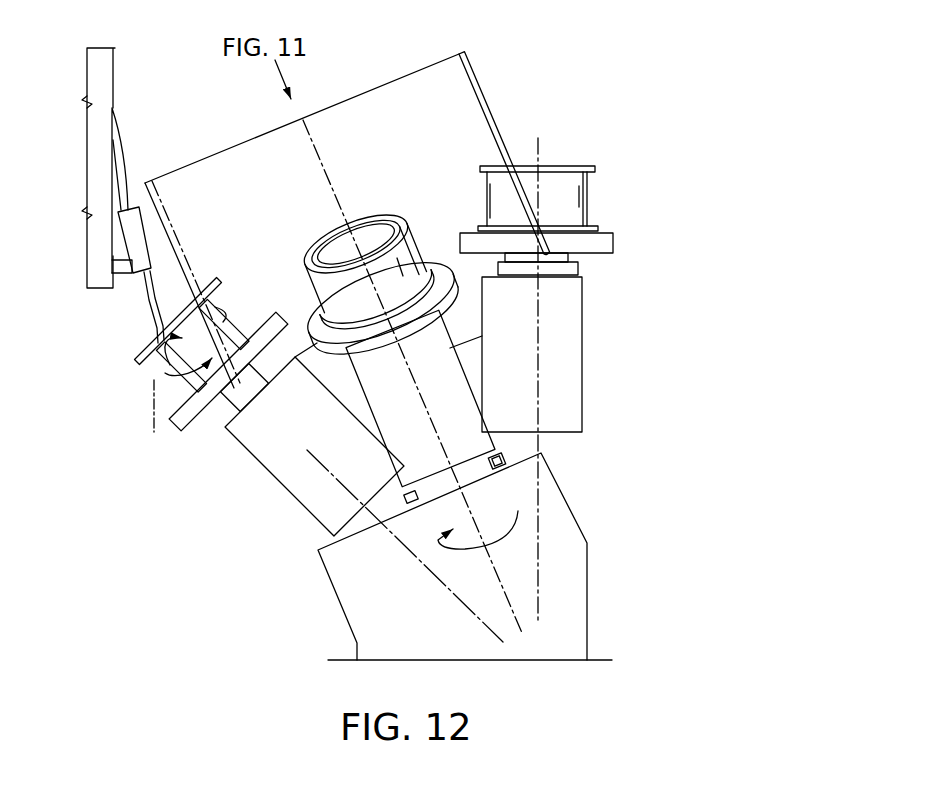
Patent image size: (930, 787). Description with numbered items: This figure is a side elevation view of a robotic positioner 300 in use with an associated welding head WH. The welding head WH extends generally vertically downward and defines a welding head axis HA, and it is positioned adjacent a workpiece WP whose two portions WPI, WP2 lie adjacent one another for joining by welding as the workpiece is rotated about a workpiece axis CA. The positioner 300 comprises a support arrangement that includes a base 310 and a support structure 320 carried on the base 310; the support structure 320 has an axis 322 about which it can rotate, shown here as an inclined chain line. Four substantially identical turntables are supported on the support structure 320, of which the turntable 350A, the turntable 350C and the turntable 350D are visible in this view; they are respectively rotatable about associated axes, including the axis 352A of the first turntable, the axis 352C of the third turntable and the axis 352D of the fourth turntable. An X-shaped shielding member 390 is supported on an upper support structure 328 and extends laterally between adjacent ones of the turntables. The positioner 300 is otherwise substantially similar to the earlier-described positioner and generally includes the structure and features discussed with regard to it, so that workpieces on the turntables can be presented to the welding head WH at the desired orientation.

The X-shaped shielding member 390 is at (452, 165).
The welding head WH is at (130, 283).
The workpiece WP is at (140, 375).
The workpiece portion WPI is at (593, 197).
The turntable 350C is at (614, 251).
The support structure 320 is at (516, 444).
The turntable axis 352C is at (540, 341).
The base 310 is at (558, 618).
The support structure axis 322 is at (505, 592).
The robotic positioner 300 is at (384, 407).
The turntable axis 352A is at (306, 452).
The turntable axis 352D is at (407, 533).
The upper support structure 328 is at (464, 305).
The workpiece portion WP2 is at (341, 244).
The turntable 350A is at (182, 438).
The welding head axis HA is at (160, 423).
The workpiece axis CA is at (170, 397).
The turntable 350D is at (492, 516).